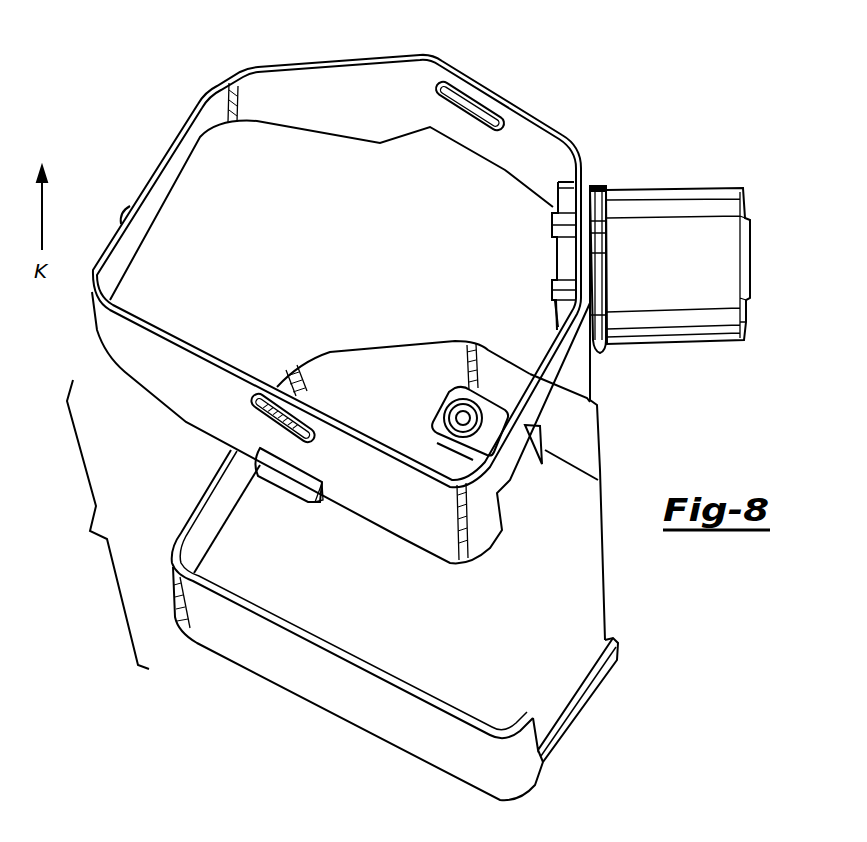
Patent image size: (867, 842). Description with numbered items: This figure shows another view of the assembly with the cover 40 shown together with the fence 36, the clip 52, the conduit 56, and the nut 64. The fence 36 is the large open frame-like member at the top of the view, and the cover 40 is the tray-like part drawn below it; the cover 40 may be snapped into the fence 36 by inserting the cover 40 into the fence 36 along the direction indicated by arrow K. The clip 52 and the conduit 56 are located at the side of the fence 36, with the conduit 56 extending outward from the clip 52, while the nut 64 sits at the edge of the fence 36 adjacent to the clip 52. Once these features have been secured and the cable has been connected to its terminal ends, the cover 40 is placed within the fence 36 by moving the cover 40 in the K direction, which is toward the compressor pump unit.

The fence 36 is at (530, 145).
The cover 40 is at (470, 654).
The clip 52 is at (606, 238).
The conduit 56 is at (703, 213).
The nut 64 is at (560, 256).